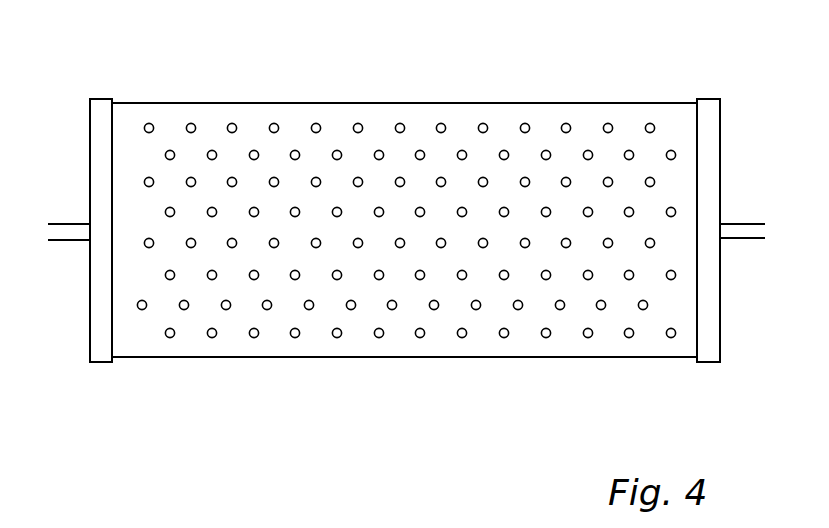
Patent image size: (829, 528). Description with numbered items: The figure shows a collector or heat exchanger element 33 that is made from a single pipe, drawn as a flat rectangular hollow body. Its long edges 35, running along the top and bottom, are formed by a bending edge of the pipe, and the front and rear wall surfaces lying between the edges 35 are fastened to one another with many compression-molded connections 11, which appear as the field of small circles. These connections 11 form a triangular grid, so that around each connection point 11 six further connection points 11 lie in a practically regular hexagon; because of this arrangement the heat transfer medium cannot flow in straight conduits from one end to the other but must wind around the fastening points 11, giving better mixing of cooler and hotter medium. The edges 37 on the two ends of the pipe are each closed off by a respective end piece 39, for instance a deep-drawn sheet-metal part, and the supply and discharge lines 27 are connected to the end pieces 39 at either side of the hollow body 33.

The compression-molded connections 11 is at (518, 310).
The supply and discharge lines 27 is at (63, 242).
The heat exchanger element 33 is at (517, 84).
The edges 35 is at (345, 103).
The edges on the ends of the pipe 37 is at (113, 337).
The end piece 39 is at (95, 345).